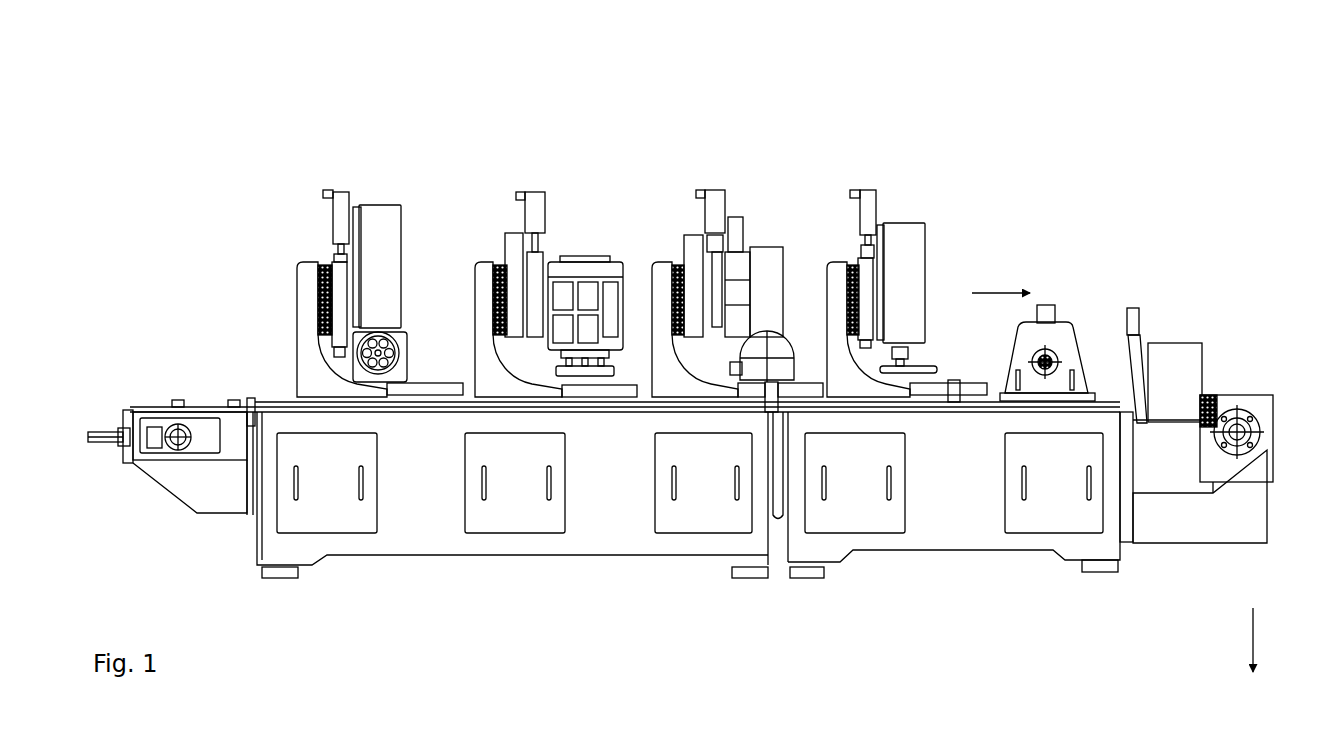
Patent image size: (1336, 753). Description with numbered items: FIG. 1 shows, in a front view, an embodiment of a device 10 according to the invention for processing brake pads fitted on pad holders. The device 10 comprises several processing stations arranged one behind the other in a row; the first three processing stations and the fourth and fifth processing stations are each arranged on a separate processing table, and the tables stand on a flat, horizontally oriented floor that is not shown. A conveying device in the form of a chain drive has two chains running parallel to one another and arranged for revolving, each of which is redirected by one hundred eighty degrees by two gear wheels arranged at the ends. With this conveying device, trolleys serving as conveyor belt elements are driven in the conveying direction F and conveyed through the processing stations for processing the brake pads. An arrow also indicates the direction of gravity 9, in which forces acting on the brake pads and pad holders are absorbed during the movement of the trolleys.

The direction of gravity 9 is at (1266, 640).
The device 10 is at (964, 130).